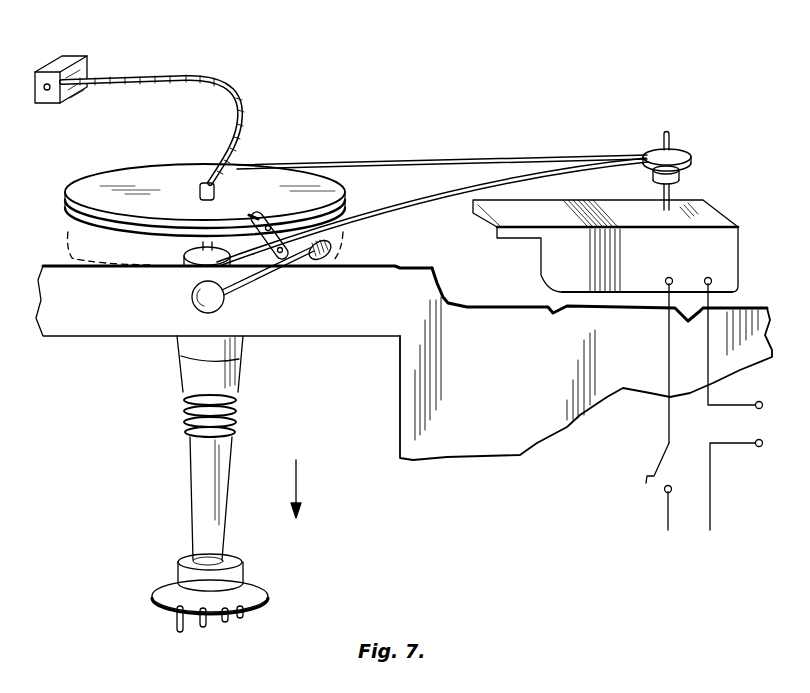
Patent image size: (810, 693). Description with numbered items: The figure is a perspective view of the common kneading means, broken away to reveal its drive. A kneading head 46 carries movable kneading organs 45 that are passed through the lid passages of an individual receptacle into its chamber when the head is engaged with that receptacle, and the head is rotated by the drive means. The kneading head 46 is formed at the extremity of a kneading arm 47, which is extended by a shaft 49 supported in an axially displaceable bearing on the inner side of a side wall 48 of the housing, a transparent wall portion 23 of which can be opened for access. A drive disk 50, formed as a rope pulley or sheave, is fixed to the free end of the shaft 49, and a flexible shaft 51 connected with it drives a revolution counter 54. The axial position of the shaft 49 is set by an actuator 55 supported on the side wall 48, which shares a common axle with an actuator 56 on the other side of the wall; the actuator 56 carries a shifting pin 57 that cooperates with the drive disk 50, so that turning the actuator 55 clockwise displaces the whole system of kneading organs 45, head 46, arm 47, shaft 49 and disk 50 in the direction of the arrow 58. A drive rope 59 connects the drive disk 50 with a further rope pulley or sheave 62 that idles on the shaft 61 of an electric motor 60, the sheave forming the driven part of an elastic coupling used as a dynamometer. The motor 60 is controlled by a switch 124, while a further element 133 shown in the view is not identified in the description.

The wall portion 23 is at (398, 367).
The kneading organs 45 is at (177, 623).
The kneading head 46 is at (190, 580).
The kneading arm 47 is at (198, 455).
The side wall 48 is at (62, 323).
The shaft 49 is at (216, 184).
The drive disk 50 is at (122, 178).
The flexible shaft 51 is at (243, 102).
The revolution counter 54 is at (70, 92).
The actuator 55 is at (263, 284).
The actuator 56 is at (331, 240).
The shifting pin 57 is at (259, 217).
The arrow 58 is at (299, 483).
The drive rope 59 is at (433, 166).
The electric motor 60 is at (705, 219).
The shaft 61 is at (671, 192).
The rope pulley or sheave 62 is at (657, 153).
The switch 124 is at (664, 489).
The conductors 133 is at (710, 358).